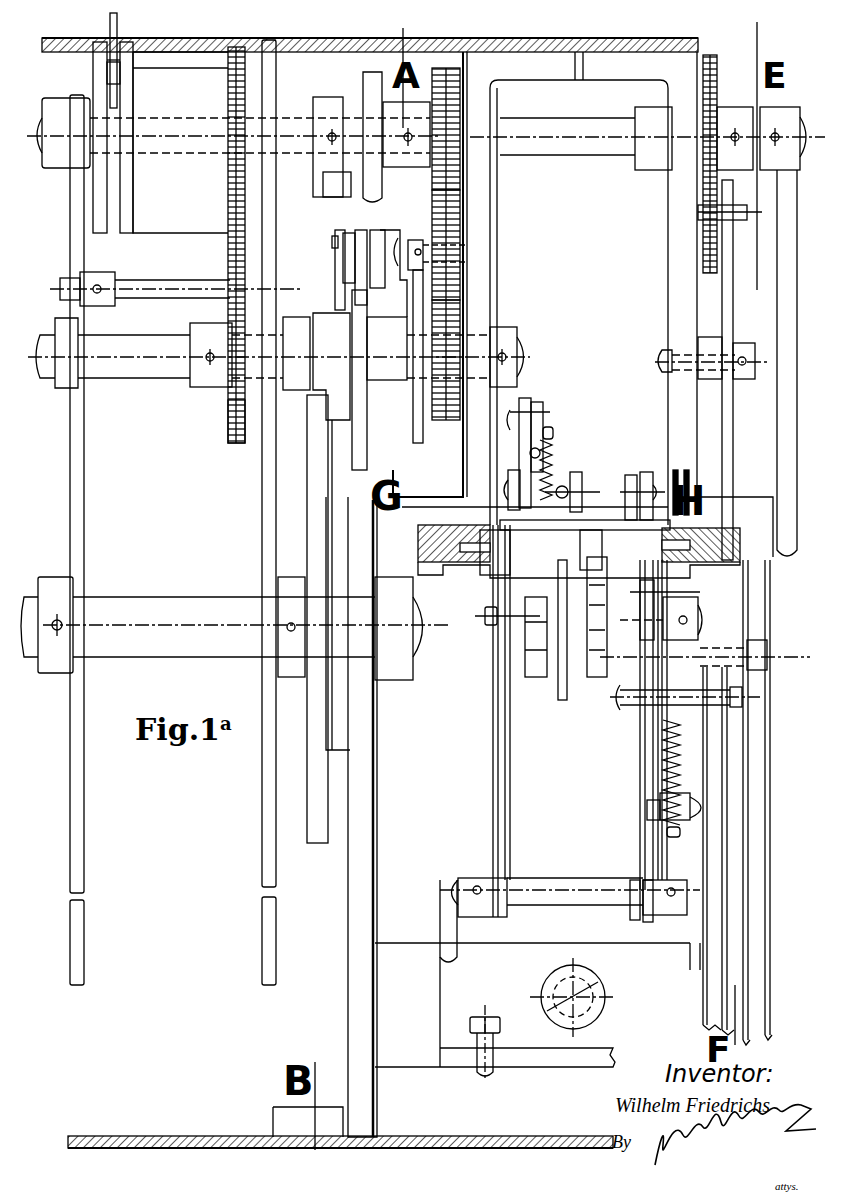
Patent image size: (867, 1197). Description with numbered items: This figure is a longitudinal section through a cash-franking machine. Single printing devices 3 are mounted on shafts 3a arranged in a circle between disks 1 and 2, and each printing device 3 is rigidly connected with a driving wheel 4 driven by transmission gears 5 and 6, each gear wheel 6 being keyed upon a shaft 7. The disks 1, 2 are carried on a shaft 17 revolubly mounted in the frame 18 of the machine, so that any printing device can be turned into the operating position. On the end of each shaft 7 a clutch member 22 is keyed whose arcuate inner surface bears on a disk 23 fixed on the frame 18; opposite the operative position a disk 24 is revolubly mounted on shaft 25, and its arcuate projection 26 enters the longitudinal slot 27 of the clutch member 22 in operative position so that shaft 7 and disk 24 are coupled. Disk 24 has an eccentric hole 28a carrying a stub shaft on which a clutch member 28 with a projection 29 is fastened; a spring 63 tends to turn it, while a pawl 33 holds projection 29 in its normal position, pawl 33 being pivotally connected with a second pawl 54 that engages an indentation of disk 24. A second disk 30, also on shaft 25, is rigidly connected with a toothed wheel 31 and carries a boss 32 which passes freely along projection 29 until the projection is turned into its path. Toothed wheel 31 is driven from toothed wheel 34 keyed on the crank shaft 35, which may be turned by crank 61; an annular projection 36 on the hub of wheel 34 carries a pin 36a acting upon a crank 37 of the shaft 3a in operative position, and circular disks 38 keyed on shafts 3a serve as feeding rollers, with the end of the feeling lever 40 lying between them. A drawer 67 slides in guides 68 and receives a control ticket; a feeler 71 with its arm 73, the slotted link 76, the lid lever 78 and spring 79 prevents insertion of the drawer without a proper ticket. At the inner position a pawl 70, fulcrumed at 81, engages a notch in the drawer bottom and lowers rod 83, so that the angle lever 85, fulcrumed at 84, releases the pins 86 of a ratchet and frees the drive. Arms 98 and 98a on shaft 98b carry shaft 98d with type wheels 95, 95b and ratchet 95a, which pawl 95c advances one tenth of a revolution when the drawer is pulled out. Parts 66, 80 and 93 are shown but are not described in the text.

The disk 1 is at (82, 862).
The disk 2 is at (272, 862).
The single printing device 3 is at (174, 208).
The shaft 3a is at (238, 136).
The driving wheel 4 is at (228, 88).
The transmission gear 5 is at (236, 250).
The transmission gear 6 is at (232, 425).
The shaft 7 is at (160, 360).
The shaft 17 is at (183, 617).
The frame 18 is at (357, 858).
The clutch member 22 is at (322, 372).
The disk 23 is at (322, 513).
The disk 24 is at (360, 432).
The shaft 25 is at (505, 360).
The arcuate projection 26 is at (337, 330).
The longitudinal slot 27 is at (290, 408).
The clutch member 28 is at (383, 265).
The eccentrically located hole 28a is at (387, 348).
The projection 29 is at (375, 268).
The second disk 30 is at (418, 436).
The toothed wheel 31 is at (470, 328).
The boss 32 is at (470, 256).
The pawl 33 is at (380, 236).
The toothed wheel 34 is at (455, 75).
The crank shaft 35 is at (602, 148).
The annular projection 36 is at (372, 100).
The pin 36a is at (352, 190).
The crank 37 is at (318, 115).
The circular disk 38 is at (128, 58).
The feeling lever 40 is at (110, 30).
The second pawl 54 is at (345, 236).
The crank 61 is at (785, 335).
The spring 63 is at (332, 242).
The hub 66 is at (420, 248).
The drawer 67 is at (562, 550).
The guides 68 is at (420, 548).
The pawl 70 is at (665, 605).
The feeler 71 is at (578, 492).
The arm 73 is at (548, 505).
The link 76 is at (527, 410).
The lever 78 is at (528, 412).
The spring 79 is at (552, 445).
The bar 80 is at (568, 640).
The fulcrum 81 is at (750, 656).
The rod 83 is at (718, 770).
The fulcrum 84 is at (712, 360).
The angle lever 85 is at (733, 282).
The pins 86 is at (737, 213).
The frame bar 93 is at (730, 897).
The type wheel 95 is at (612, 680).
The ratchet 95a is at (695, 598).
The type wheel 95b is at (538, 680).
The pawl 95c is at (642, 890).
The arm 98 is at (650, 758).
The arm 98a is at (497, 776).
The shaft 98b is at (553, 895).
The shaft 98d is at (486, 620).